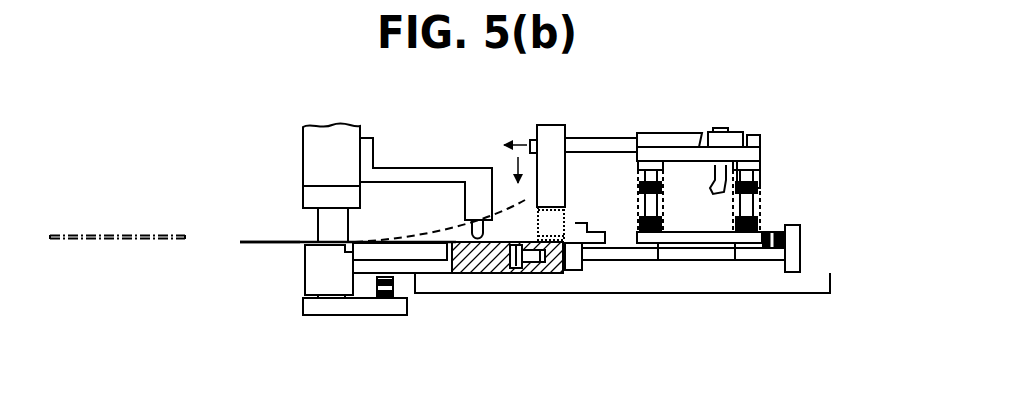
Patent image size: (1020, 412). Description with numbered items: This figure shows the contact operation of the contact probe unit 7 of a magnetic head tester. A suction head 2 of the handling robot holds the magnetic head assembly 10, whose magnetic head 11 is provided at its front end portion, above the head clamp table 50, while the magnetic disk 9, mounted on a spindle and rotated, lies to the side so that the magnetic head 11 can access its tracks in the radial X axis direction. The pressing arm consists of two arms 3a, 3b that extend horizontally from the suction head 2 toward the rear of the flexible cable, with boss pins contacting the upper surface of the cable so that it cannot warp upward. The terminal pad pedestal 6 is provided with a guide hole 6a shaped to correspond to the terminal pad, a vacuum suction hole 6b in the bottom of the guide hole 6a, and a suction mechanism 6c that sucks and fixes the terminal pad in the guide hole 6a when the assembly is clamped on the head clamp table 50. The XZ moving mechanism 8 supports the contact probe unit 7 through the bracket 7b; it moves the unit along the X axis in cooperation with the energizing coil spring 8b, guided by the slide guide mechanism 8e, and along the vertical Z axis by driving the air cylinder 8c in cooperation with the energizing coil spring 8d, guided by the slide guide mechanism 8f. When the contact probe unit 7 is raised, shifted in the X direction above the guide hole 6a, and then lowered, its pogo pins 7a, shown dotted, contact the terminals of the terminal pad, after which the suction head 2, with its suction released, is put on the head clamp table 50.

The suction head 2 is at (334, 123).
The arm 3a is at (426, 168).
The arm 3b is at (413, 167).
The terminal pad pedestal 6 is at (538, 301).
The guide hole 6a is at (507, 266).
The vacuum suction hole 6b is at (514, 263).
The suction mechanism 6c is at (593, 276).
The contact probe unit 7 is at (549, 124).
The pogo pins 7a is at (565, 207).
The bracket 7b is at (603, 137).
The XZ moving mechanism 8 is at (718, 191).
The energizing coil spring 8b is at (767, 262).
The air cylinder 8c is at (726, 178).
The energizing coil spring 8d is at (757, 194).
The slide guide mechanism 8e is at (699, 250).
The slide guide mechanism 8f is at (705, 212).
The magnetic disk 9 is at (115, 231).
The magnetic head assembly 10 is at (284, 236).
The magnetic head 11 is at (257, 241).
The head clamp table 50 is at (294, 263).